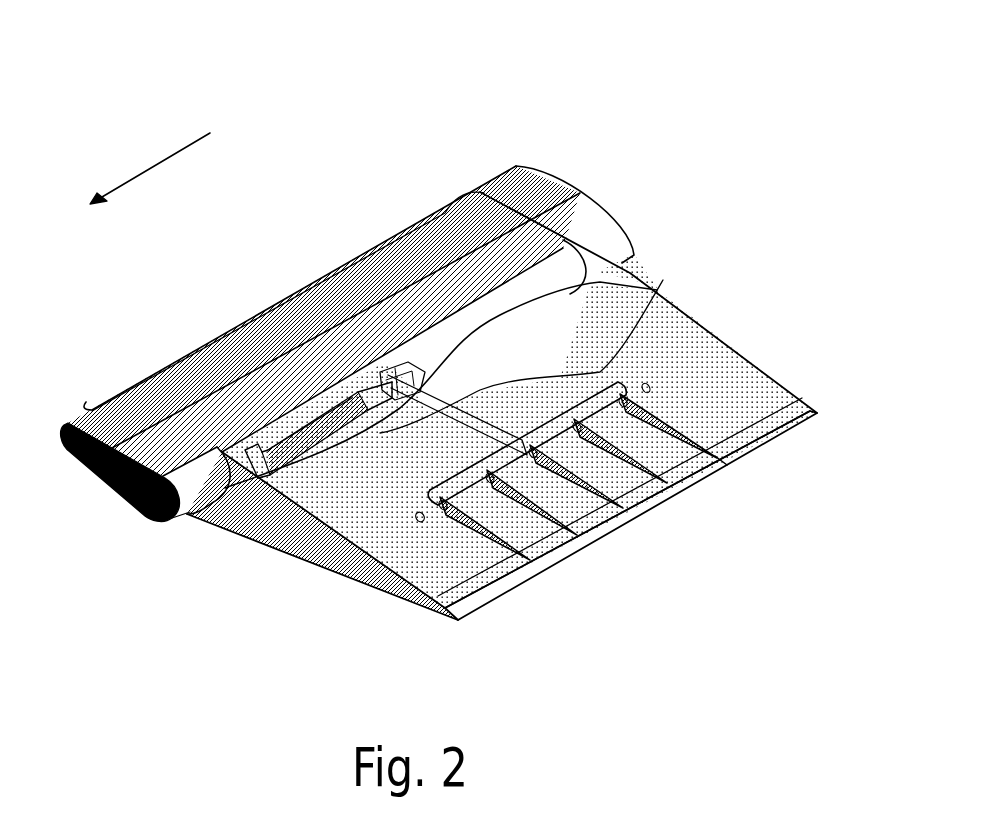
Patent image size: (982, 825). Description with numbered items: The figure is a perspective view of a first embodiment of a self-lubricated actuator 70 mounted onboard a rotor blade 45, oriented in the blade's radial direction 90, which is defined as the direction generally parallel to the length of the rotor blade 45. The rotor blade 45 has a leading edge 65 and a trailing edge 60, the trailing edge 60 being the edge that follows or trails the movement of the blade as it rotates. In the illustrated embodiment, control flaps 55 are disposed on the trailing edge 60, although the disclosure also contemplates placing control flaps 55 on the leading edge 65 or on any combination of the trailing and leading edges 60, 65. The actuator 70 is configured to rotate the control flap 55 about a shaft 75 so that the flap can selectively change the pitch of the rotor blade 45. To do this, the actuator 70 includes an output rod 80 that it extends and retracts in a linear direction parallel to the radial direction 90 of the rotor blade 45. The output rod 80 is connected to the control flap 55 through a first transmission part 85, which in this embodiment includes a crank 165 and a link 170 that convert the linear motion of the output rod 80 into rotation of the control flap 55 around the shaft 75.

The rotor blade 45 is at (740, 125).
The control flap 55 is at (663, 510).
The trailing edge 60 is at (487, 610).
The leading edge 65 is at (270, 298).
The self-lubricated actuator 70 is at (335, 438).
The shaft 75 is at (415, 518).
The output rod 80 is at (253, 490).
The first transmission part 85 is at (640, 282).
The radial direction 90 is at (140, 173).
The crank 165 is at (395, 378).
The link 170 is at (320, 553).